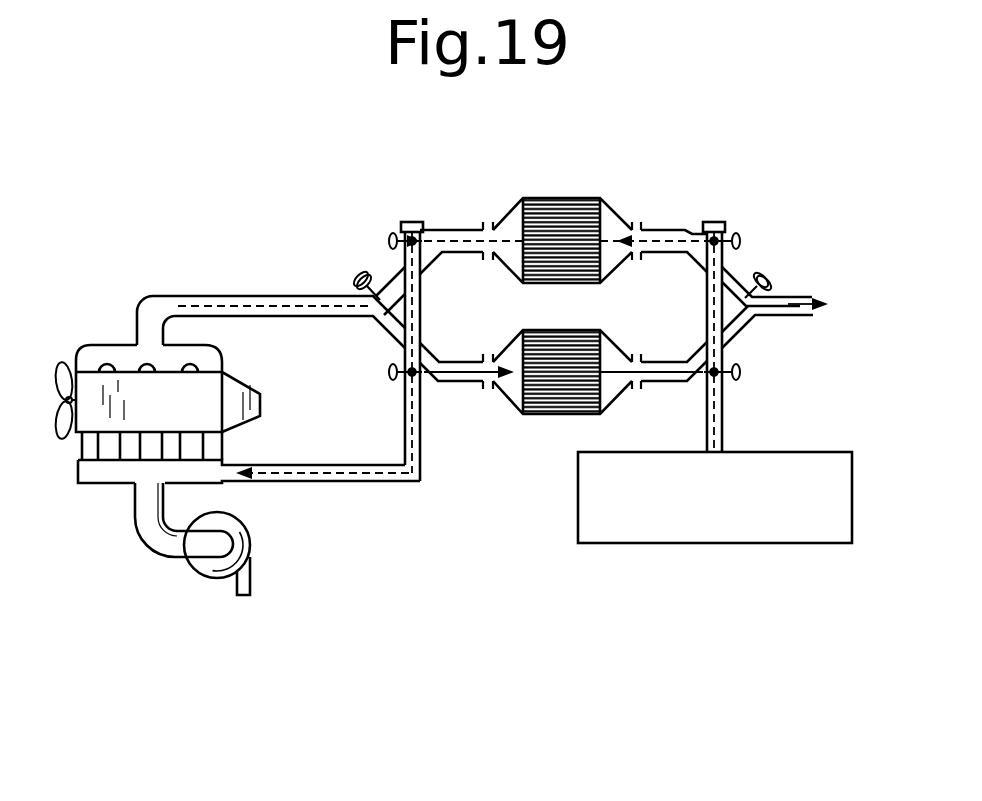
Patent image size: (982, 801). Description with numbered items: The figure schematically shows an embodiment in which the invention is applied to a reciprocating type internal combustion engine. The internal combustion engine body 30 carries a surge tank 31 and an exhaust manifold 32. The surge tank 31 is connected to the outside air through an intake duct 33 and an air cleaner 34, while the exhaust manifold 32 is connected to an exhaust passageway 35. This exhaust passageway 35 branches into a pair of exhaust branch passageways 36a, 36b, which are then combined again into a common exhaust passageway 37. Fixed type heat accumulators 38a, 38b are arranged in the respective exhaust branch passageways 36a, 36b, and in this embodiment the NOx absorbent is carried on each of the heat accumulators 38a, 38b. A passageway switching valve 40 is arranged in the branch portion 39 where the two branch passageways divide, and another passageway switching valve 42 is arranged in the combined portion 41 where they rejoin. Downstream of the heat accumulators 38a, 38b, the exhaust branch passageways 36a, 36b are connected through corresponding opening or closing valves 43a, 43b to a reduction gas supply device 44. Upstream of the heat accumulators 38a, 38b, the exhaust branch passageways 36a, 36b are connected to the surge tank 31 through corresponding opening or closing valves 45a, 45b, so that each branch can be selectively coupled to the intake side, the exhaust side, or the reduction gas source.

The internal combustion engine body 30 is at (212, 403).
The surge tank 31 is at (102, 477).
The exhaust manifold 32 is at (103, 352).
The intake duct 33 is at (158, 542).
The air cleaner 34 is at (210, 578).
The exhaust passageway 35 is at (250, 296).
The exhaust branch passageway 36a is at (471, 230).
The exhaust branch passageway 36b is at (468, 384).
The common exhaust passageway 37 is at (785, 297).
The fixed type heat accumulator 38a is at (575, 200).
The fixed type heat accumulator 38b is at (568, 398).
The branch portion 39 is at (375, 318).
The passageway switching valve 40 is at (384, 292).
The combined portion 41 is at (757, 316).
The passageway switching valve 42 is at (743, 284).
The opening or closing valve 43a is at (714, 222).
The opening or closing valve 43b is at (701, 385).
The reduction gas supply device 44 is at (830, 452).
The opening or closing valve 45a is at (410, 222).
The opening or closing valve 45b is at (403, 374).